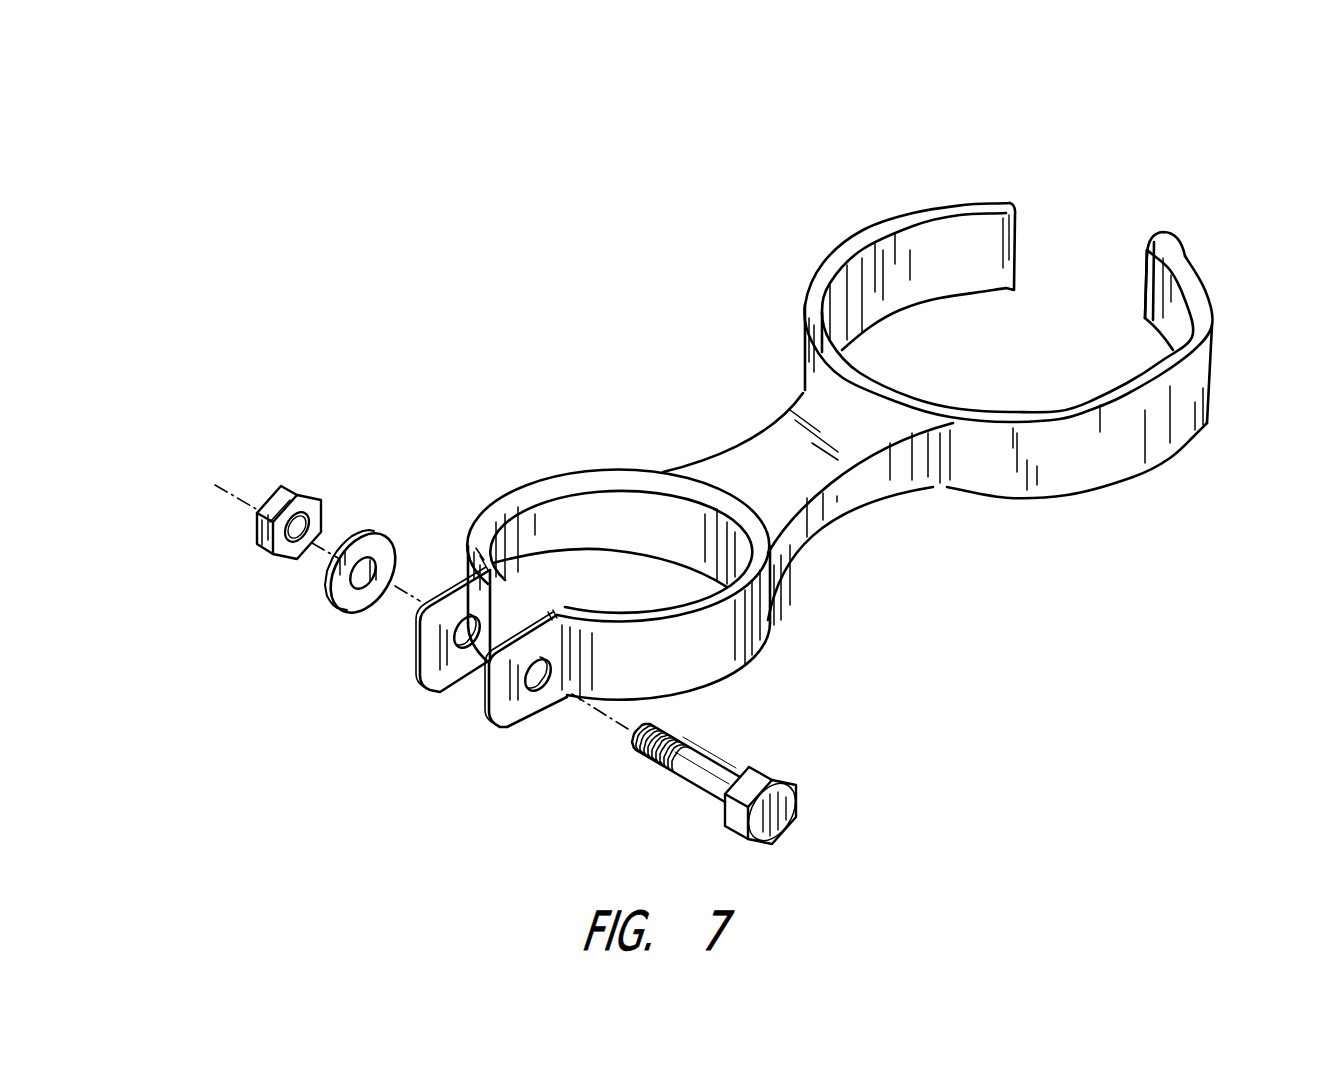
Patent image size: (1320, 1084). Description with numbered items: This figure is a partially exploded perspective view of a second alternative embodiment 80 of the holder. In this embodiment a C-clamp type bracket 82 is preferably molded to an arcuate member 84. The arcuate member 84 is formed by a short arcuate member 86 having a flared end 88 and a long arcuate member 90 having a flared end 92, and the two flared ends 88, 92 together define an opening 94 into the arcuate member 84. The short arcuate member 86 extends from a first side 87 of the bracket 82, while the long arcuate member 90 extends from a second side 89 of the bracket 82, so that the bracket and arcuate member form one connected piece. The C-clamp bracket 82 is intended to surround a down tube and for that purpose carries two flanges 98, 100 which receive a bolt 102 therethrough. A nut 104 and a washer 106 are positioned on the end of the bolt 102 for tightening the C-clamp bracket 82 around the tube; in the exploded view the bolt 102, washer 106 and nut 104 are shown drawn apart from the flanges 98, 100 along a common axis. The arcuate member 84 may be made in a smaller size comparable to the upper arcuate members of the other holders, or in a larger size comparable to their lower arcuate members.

The second alternative embodiment 80 is at (657, 331).
The C-clamp type bracket 82 is at (518, 453).
The arcuate member 84 is at (1086, 501).
The short arcuate member 86 is at (910, 248).
The first side of the bracket 87 is at (768, 423).
The flared end 88 is at (1006, 202).
The second side of the bracket 89 is at (818, 530).
The long arcuate member 90 is at (1190, 415).
The flared end 92 is at (1163, 232).
The opening 94 is at (1090, 253).
The flange 98 is at (422, 659).
The flange 100 is at (508, 728).
The bolt 102 is at (785, 789).
The nut 104 is at (297, 487).
The washer 106 is at (372, 532).